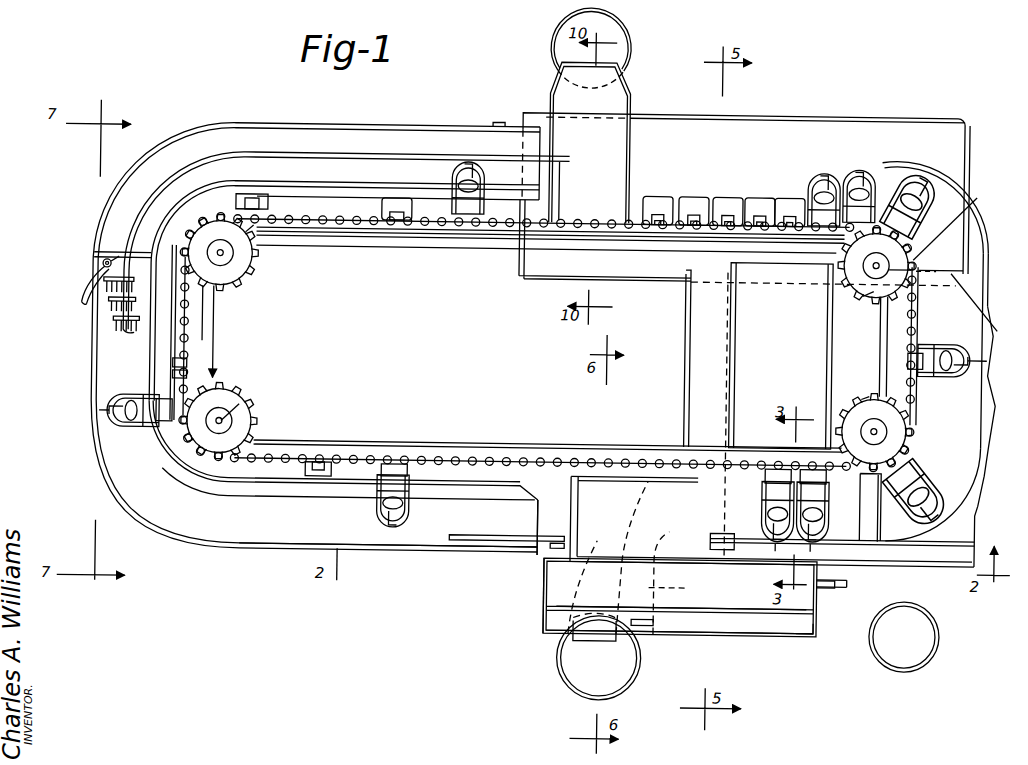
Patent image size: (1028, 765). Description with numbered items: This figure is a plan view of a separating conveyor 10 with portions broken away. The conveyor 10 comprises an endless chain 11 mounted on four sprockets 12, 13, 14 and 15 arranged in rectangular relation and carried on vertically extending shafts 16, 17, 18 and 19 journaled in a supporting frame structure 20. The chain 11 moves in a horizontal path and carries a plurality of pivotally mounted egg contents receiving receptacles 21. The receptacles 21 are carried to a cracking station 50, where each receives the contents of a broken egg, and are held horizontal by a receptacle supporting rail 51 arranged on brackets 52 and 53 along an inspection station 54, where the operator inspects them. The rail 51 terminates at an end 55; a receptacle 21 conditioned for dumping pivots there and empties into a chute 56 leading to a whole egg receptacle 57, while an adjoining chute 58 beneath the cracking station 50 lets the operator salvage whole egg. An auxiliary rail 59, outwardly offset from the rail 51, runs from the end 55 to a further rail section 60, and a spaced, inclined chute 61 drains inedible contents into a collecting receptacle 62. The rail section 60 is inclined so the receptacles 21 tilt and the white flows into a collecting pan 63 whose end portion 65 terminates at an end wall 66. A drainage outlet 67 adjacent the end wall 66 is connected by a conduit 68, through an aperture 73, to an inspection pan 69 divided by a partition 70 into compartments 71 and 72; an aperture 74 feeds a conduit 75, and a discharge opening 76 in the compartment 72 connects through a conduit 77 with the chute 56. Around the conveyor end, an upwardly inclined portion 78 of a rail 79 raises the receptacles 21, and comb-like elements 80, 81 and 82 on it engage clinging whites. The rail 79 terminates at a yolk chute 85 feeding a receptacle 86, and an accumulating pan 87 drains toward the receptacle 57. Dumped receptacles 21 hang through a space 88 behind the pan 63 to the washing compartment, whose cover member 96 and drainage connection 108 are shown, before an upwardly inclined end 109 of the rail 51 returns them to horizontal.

The conveyor 10 is at (492, 460).
The endless chain 11 is at (626, 460).
The sprocket 12 is at (866, 392).
The sprocket 13 is at (252, 412).
The sprocket 14 is at (254, 270).
The sprocket 15 is at (870, 292).
The shaft 16 is at (880, 427).
The shaft 17 is at (255, 392).
The shaft 18 is at (223, 257).
The shaft 19 is at (878, 261).
The supporting frame structure 20 is at (385, 428).
The egg contents receiving receptacle 21 is at (340, 208).
The cracking station 50 is at (952, 318).
The receptacle supporting rail 51 is at (984, 435).
The bracket 52 is at (948, 208).
The bracket 53 is at (882, 520).
The inspection station 54 is at (906, 608).
The end of support bar 55 is at (765, 535).
The chute 56 is at (697, 343).
The whole egg receptacle 57 is at (760, 126).
The adjoining chute 58 is at (976, 514).
The auxiliary rail 59 is at (640, 552).
The rail section 60 is at (496, 540).
The chute 61 is at (588, 491).
The collecting receptacle 62 is at (628, 670).
The collecting pan 63 is at (430, 527).
The end portion of pan 65 is at (97, 367).
The end wall 66 is at (114, 258).
The drainage outlet 67 is at (102, 267).
The conduit 68 is at (82, 296).
The inspection pan 69 is at (745, 633).
The partition 70 is at (808, 611).
The compartment 71 is at (758, 600).
The compartment 72 is at (800, 632).
The aperture 73 is at (562, 588).
The aperture 74 is at (815, 588).
The conduit 75 is at (840, 582).
The discharge opening 76 is at (648, 626).
The conduit 77 is at (677, 589).
The upwardly inclined portion 78 is at (136, 330).
The rail 79 is at (268, 162).
The comb-like element 80 is at (114, 325).
The comb-like element 81 is at (108, 308).
The comb-like element 82 is at (100, 273).
The chute 85 is at (616, 102).
The receptacle 86 is at (624, 40).
The accumulating pan 87 is at (333, 127).
The space 88 is at (426, 484).
The cover member 96 is at (158, 365).
The drainage connection 108 is at (214, 334).
The upwardly inclined end 109 is at (895, 160).